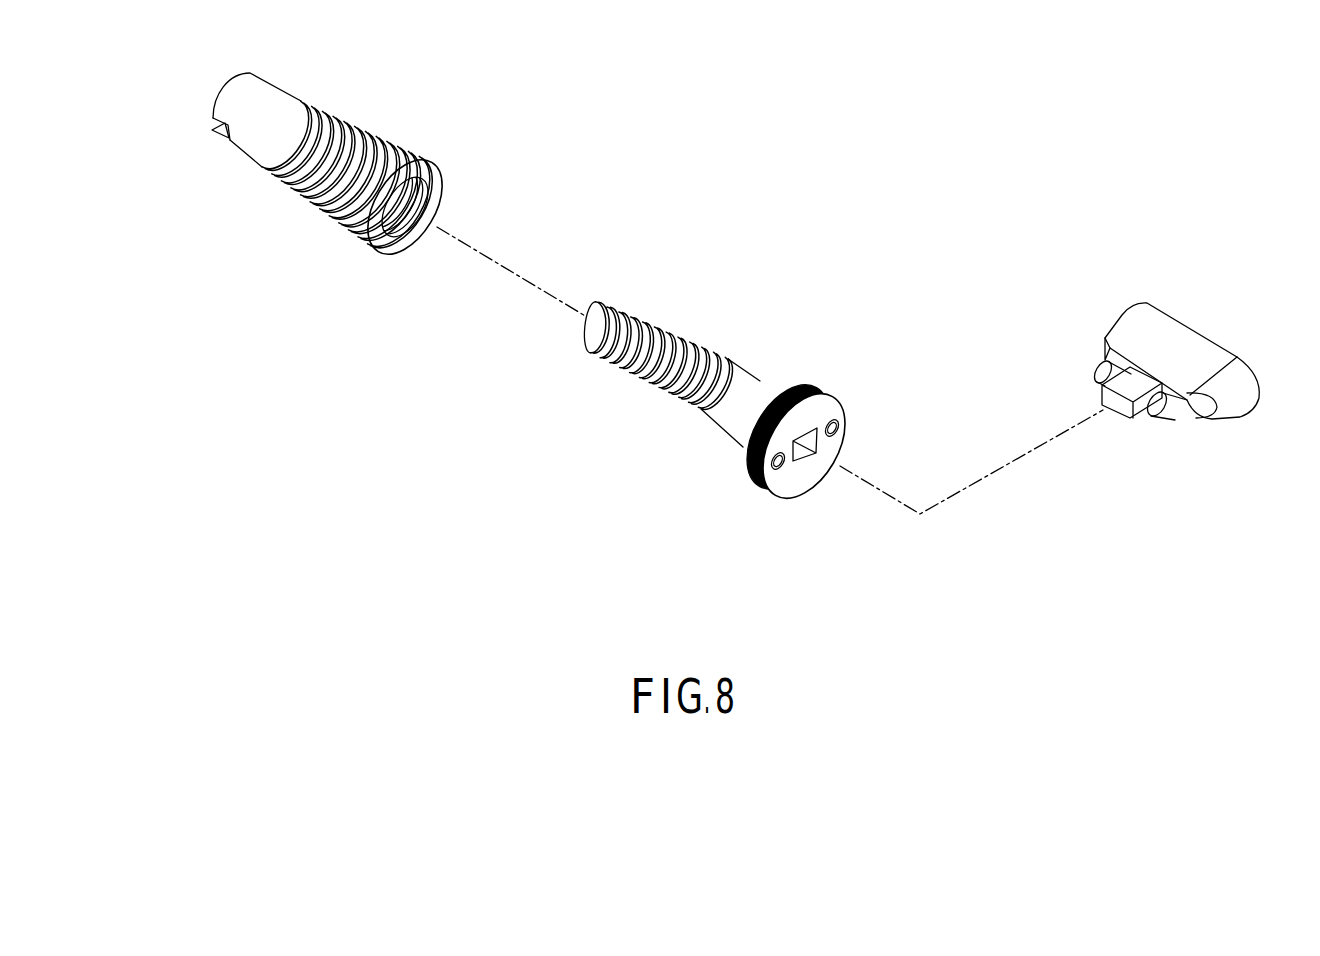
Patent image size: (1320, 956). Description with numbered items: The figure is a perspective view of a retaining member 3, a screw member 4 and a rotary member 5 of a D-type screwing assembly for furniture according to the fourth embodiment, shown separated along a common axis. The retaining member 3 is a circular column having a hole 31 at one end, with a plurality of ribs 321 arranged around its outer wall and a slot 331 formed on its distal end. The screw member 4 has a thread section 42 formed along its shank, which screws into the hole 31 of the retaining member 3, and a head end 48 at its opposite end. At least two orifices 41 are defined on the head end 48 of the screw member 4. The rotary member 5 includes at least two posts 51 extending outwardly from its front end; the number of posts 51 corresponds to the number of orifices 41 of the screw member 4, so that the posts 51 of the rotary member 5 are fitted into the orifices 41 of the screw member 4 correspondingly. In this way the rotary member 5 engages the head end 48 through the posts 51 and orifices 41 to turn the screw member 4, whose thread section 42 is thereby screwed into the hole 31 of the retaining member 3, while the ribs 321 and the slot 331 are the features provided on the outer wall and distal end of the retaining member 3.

The retaining member 3 is at (265, 98).
The hole 31 is at (443, 202).
The slot 331 is at (220, 135).
The ribs 321 is at (307, 200).
The screw member 4 is at (553, 475).
The orifices 41 is at (838, 428).
The thread section 42 is at (663, 377).
The head end 48 is at (815, 398).
The rotary member 5 is at (1182, 345).
The posts 51 is at (1168, 403).